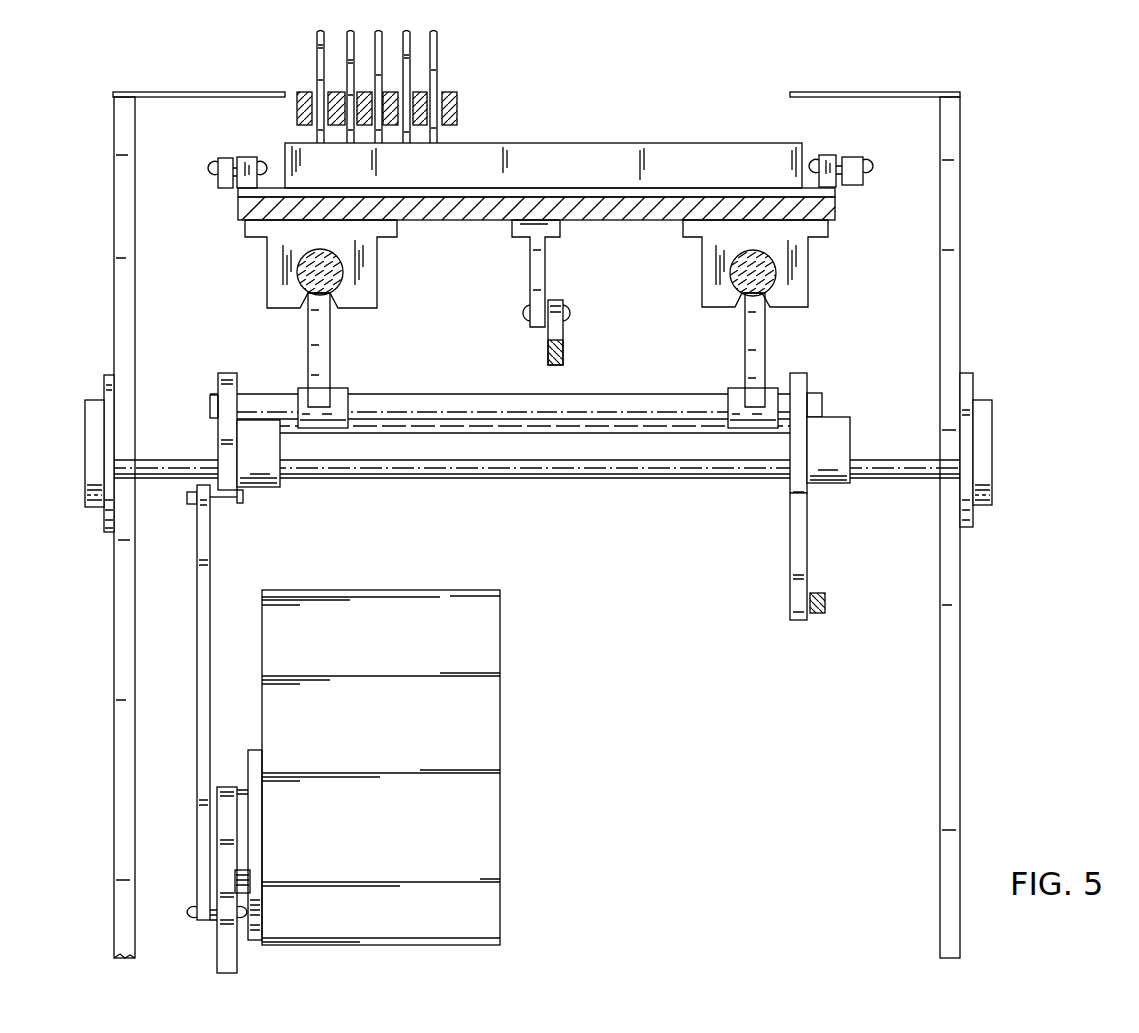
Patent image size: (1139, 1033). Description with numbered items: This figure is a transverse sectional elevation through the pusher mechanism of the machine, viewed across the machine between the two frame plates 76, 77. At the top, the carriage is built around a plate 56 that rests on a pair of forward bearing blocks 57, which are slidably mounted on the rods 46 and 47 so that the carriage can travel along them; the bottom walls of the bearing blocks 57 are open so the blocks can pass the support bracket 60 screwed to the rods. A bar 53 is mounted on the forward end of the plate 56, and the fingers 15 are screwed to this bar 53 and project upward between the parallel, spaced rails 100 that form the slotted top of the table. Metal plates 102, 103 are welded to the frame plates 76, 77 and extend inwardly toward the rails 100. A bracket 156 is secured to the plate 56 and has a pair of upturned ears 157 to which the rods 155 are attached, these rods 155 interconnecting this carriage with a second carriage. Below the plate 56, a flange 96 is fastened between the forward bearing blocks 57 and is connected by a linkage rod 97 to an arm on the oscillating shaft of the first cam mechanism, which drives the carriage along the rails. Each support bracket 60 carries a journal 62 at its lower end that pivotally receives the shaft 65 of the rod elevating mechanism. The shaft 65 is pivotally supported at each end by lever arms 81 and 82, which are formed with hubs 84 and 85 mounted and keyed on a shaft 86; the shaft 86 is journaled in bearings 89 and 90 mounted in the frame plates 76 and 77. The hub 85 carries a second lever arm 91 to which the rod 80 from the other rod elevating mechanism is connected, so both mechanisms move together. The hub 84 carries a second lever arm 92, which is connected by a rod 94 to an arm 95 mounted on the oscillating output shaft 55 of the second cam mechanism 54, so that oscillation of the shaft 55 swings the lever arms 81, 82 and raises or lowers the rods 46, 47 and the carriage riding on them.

The fingers 15 is at (437, 60).
The rod 46 is at (330, 275).
The rod 47 is at (758, 283).
The bar 53 is at (630, 144).
The second cam mechanism 54 is at (488, 660).
The oscillating output shaft 55 is at (240, 838).
The plate 56 is at (825, 210).
The forward bearing blocks 57 is at (374, 266).
The support bracket 60 is at (320, 338).
The journal 62 is at (334, 400).
The shaft 65 is at (458, 394).
The frame plate 76 is at (130, 609).
The frame plate 77 is at (960, 562).
The rod 80 is at (822, 608).
The lever arm 81 is at (218, 377).
The lever arm 82 is at (806, 380).
The hub 84 is at (270, 480).
The hub 85 is at (838, 480).
The shaft 86 is at (497, 464).
The bearing 89 is at (94, 428).
The bearing 90 is at (985, 440).
The second lever arm 91 is at (797, 528).
The second lever arm 92 is at (230, 504).
The rod 94 is at (204, 581).
The arm 95 is at (224, 876).
The flange 96 is at (535, 266).
The linkage rod 97 is at (563, 330).
The rails 100 is at (418, 94).
The metal plate 102 is at (200, 92).
The metal plate 103 is at (879, 94).
The rods 155 is at (222, 183).
The bracket 156 is at (545, 190).
The upturned ears 157 is at (250, 156).